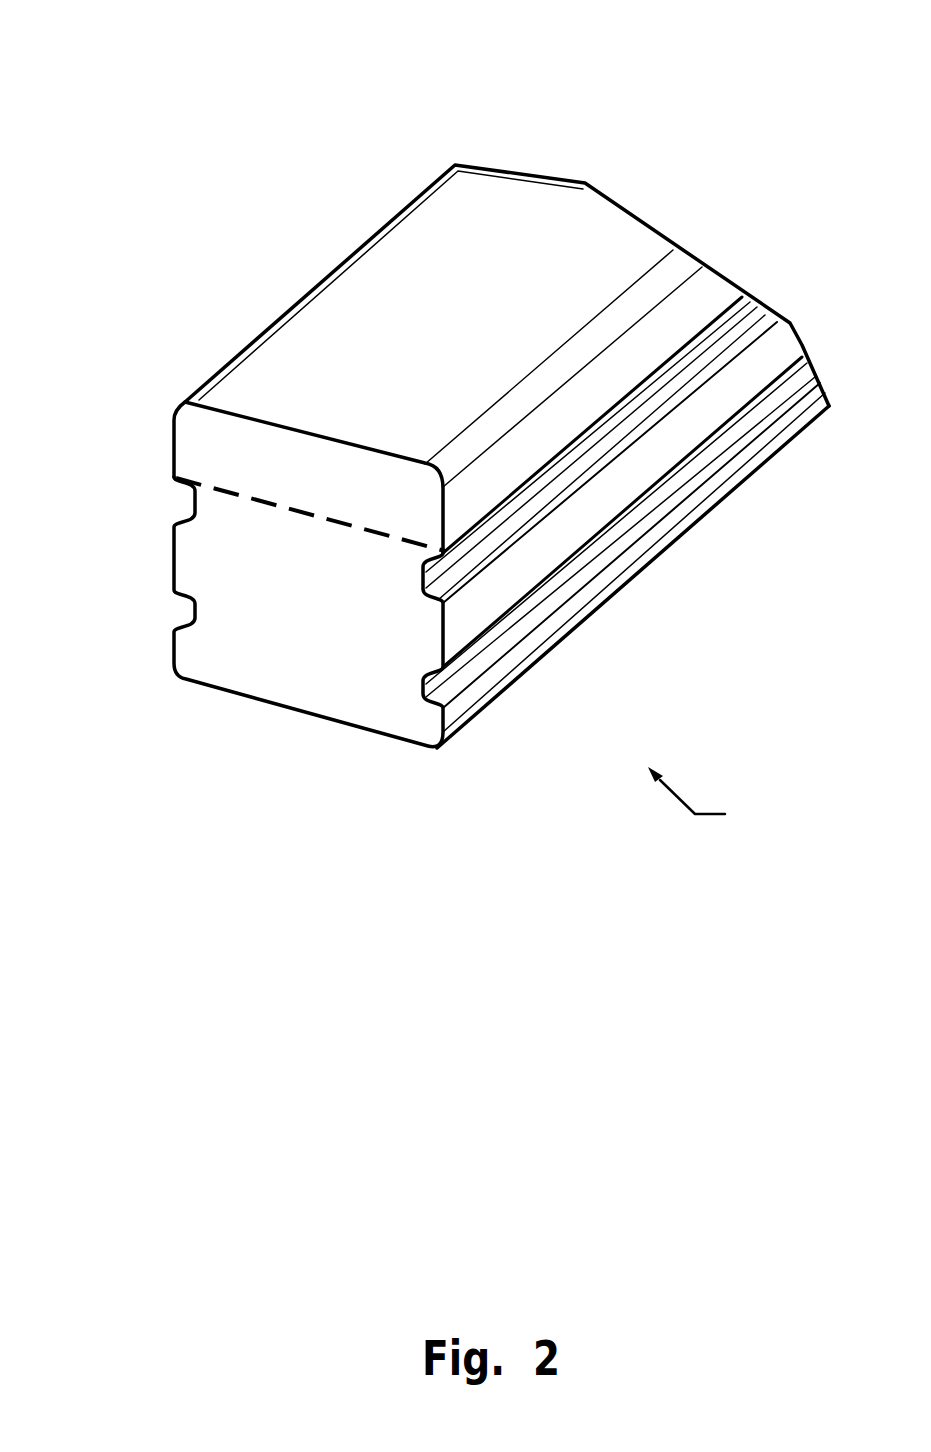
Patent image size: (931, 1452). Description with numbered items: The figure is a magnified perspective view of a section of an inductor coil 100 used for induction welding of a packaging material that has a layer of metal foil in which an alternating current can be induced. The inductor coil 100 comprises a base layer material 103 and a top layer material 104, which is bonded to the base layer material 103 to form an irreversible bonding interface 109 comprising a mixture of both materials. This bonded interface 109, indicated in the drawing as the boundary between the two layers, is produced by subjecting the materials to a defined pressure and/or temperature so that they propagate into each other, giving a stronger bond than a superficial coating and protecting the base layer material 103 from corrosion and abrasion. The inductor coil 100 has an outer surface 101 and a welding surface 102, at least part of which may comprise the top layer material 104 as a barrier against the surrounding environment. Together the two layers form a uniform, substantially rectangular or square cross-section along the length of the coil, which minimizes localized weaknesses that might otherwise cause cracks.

The inductor coil 100 is at (190, 62).
The outer surface 101 is at (377, 335).
The welding surface 102 is at (441, 329).
The base layer material 103 is at (240, 610).
The top layer material 104 is at (227, 440).
The bonding interface 109 is at (250, 498).